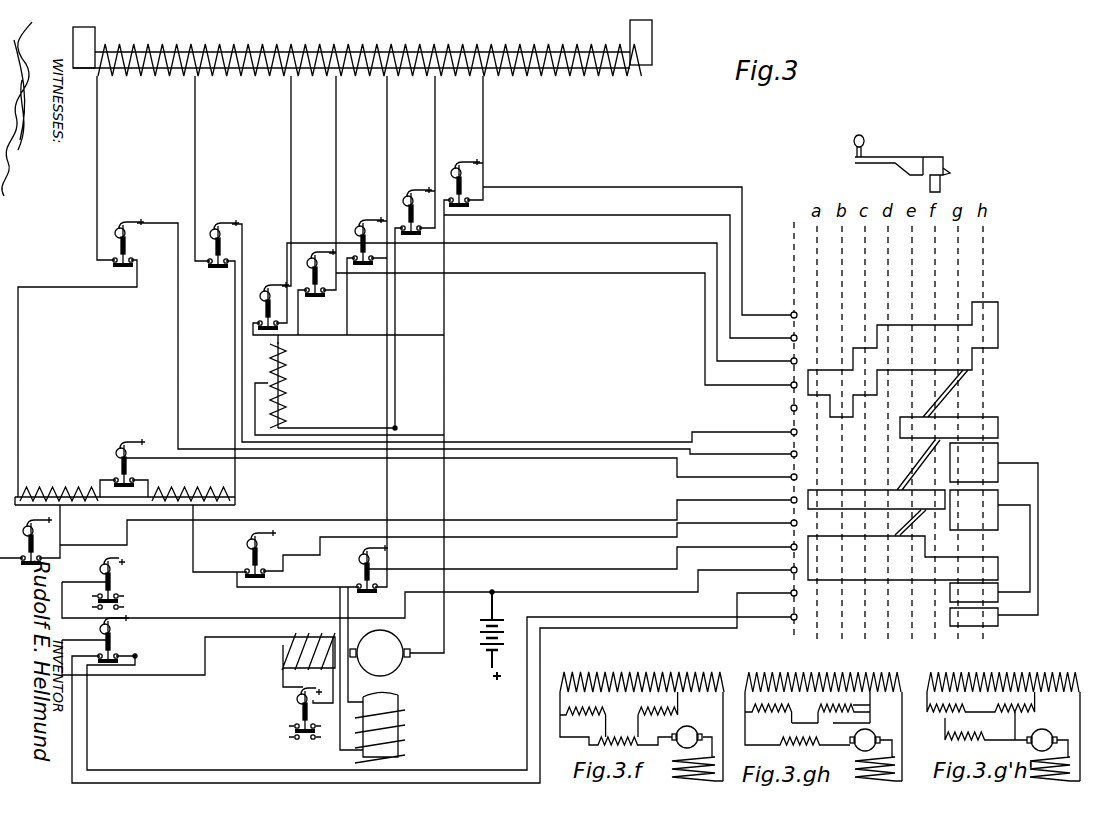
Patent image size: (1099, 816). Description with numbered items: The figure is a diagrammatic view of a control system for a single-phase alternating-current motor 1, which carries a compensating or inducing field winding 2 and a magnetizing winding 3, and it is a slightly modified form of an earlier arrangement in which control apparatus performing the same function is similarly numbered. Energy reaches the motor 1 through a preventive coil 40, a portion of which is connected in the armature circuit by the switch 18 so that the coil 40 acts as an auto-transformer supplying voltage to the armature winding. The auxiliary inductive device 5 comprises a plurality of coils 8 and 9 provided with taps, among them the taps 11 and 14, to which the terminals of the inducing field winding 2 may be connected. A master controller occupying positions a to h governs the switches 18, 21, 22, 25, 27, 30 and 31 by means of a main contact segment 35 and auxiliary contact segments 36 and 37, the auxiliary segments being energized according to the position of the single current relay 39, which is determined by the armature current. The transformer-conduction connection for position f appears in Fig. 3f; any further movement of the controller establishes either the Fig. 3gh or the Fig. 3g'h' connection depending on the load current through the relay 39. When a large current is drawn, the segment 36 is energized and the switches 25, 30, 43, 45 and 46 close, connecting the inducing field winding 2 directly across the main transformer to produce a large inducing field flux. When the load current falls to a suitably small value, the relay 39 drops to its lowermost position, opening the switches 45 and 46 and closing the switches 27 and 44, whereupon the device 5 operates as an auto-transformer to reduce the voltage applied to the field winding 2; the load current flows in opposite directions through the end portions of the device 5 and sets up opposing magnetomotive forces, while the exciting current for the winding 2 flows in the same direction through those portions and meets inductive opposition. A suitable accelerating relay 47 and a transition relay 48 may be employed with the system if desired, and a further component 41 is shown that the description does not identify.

In FIG. 3, the motor 1 is at (412, 628).
In FIG. 3, the inducing field winding 2 is at (306, 640).
In FIG. 3, the magnetizing winding 3 is at (403, 727).
In FIG. 3, the auxiliary inductive device 5 is at (95, 474).
In FIG. 3g'h', the auxiliary inductive device 5 is at (975, 716).
In FIG. 3, the coil 8 is at (195, 497).
In FIG. 3gh, the coil 8 is at (812, 708).
In FIG. 3, the coil 9 is at (50, 497).
In FIG. 3gh, the coil 9 is at (768, 706).
In FIG. 3, the tap 11 is at (60, 527).
In FIG. 3, the tap 14 is at (193, 551).
In FIG. 3, the switch 18 is at (360, 562).
In FIG. 3, the switch 21 is at (318, 265).
In FIG. 3, the switch 22 is at (269, 298).
In FIG. 3, the switch 25 is at (367, 233).
In FIG. 3, the switch 27 is at (120, 447).
In FIG. 3, the switch 30 is at (415, 204).
In FIG. 3, the switch 31 is at (464, 175).
In FIG. 3, the main contact segment 35 is at (998, 325).
In FIG. 3, the auxiliary contact segment 36 is at (998, 495).
In FIG. 3, the auxiliary contact segment 37 is at (998, 458).
In FIG. 3, the current relay 39 is at (128, 622).
In FIG. 3, the preventive coil 40 is at (288, 396).
In FIG. 3, the battery 41 is at (505, 630).
In FIG. 3, the switch 43 is at (220, 226).
In FIG. 3, the switch 44 is at (125, 225).
In FIG. 3, the switch 45 is at (26, 540).
In FIG. 3, the switch 46 is at (246, 546).
In FIG. 3, the accelerating relay 47 is at (118, 581).
In FIG. 3, the transition relay 48 is at (296, 716).